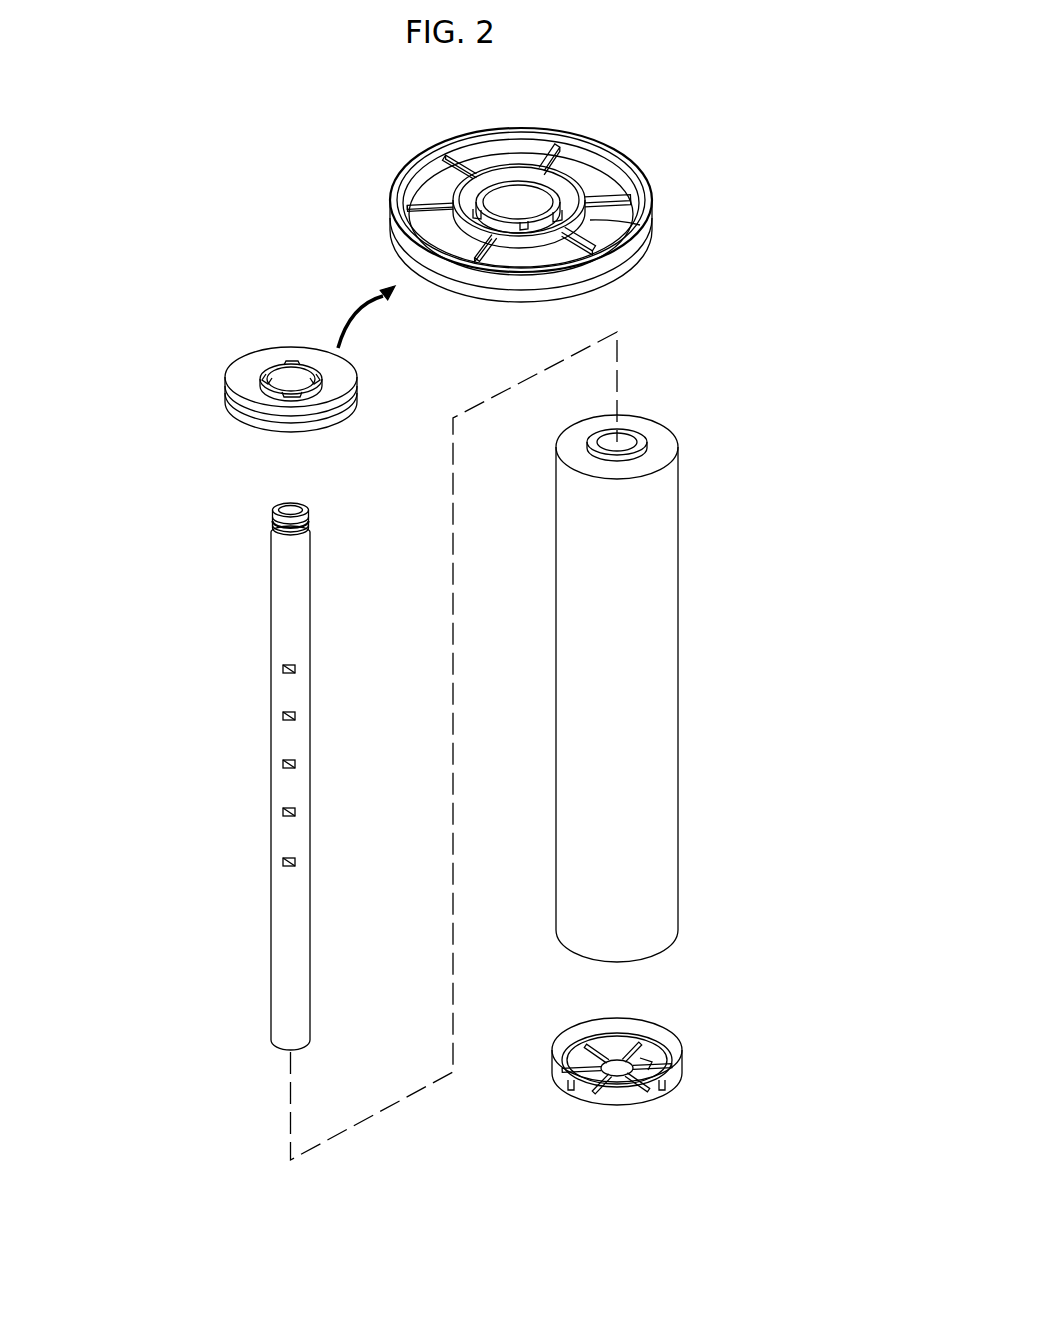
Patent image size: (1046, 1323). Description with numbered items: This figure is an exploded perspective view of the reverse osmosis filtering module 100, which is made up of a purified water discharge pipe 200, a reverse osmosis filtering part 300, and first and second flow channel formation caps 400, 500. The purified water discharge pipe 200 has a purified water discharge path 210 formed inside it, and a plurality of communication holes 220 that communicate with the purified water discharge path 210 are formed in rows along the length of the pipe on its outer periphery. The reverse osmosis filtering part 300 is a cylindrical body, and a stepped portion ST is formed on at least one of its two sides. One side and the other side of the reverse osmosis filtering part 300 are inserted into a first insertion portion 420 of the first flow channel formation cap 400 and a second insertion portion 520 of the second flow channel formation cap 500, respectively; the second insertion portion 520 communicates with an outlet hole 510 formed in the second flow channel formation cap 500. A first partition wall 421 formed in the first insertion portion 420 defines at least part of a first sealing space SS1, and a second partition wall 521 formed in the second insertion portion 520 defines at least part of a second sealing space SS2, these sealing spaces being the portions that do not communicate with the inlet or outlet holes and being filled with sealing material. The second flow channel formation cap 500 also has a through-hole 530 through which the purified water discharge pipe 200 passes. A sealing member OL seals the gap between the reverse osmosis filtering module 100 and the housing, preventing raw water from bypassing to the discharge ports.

The reverse osmosis filtering module 100 is at (318, 168).
The purified water discharge pipe 200 is at (262, 600).
The purified water discharge path 210 is at (288, 512).
The communication hole 220 is at (290, 676).
The sealing member OL is at (225, 400).
The reverse osmosis filtering part 300 is at (688, 640).
The stepped portion ST is at (668, 437).
The first flow channel formation cap 400 is at (688, 1096).
The first insertion portion 420 is at (648, 1020).
The first partition wall 421 is at (615, 1031).
The first sealing space SS1 is at (656, 1068).
The second flow channel formation cap 500 is at (252, 342).
The outlet hole 510 is at (298, 370).
The second insertion portion 520 is at (450, 273).
The second partition wall 521 is at (531, 237).
The through-hole 530 is at (490, 213).
The second sealing space SS2 is at (610, 205).